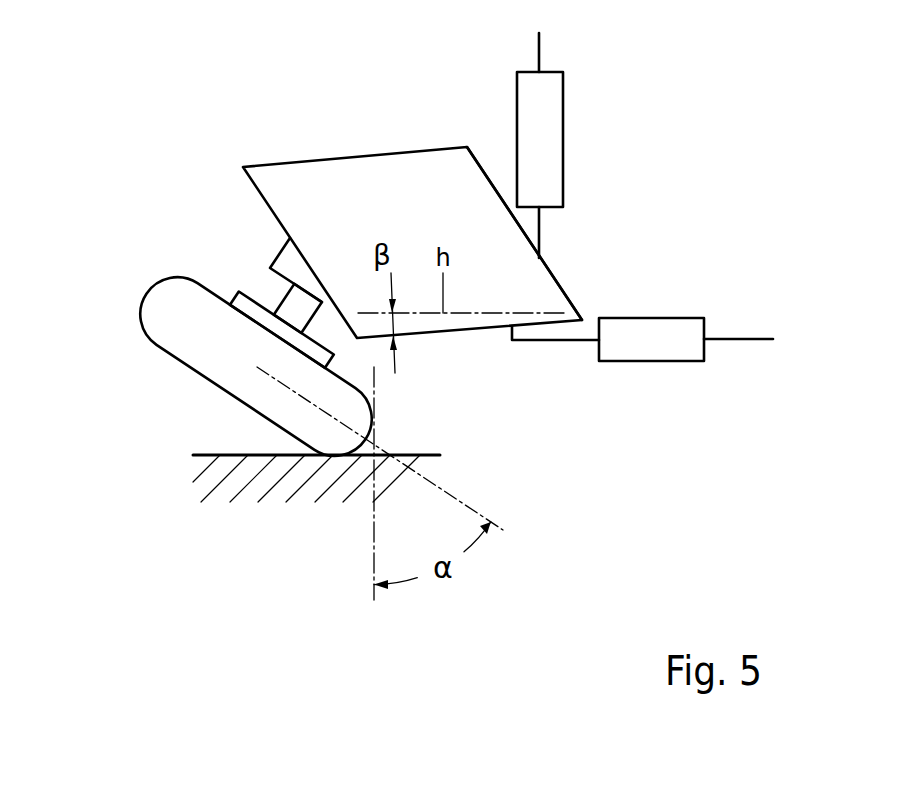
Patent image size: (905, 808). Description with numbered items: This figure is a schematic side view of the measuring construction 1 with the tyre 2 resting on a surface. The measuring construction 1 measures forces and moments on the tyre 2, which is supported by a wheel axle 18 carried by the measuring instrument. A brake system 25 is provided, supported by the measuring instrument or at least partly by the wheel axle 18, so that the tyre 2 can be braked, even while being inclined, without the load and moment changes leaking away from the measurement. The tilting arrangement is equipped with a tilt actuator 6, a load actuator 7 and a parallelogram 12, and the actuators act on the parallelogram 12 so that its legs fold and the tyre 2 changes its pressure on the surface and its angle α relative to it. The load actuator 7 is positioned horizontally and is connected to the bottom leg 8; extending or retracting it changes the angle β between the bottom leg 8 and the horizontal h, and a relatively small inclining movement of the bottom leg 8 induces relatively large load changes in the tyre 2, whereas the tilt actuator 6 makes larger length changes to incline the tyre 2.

The measuring construction 1 is at (284, 104).
The tyre 2 is at (190, 365).
The tilt actuator 6 is at (563, 106).
The load actuator 7 is at (678, 361).
The bottom leg 8 is at (472, 330).
The parallelogram 12 is at (557, 275).
The wheel axle 18 is at (284, 298).
The brake system 25 is at (230, 303).